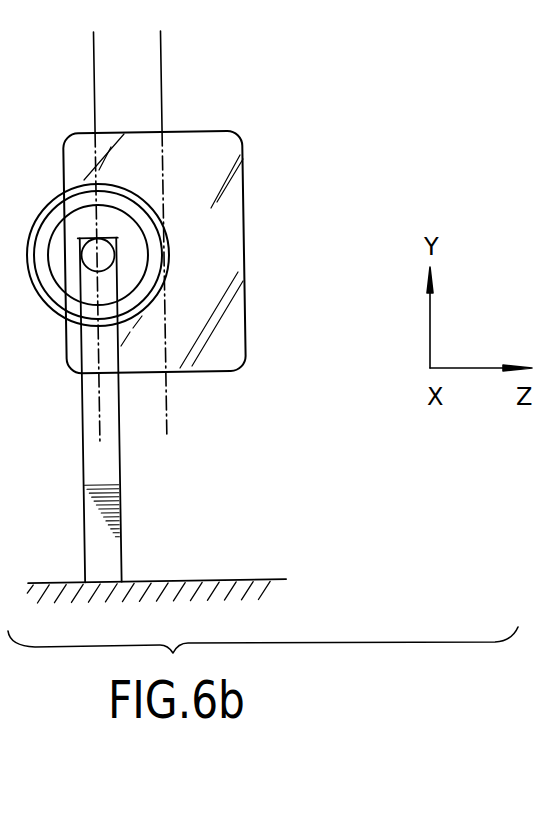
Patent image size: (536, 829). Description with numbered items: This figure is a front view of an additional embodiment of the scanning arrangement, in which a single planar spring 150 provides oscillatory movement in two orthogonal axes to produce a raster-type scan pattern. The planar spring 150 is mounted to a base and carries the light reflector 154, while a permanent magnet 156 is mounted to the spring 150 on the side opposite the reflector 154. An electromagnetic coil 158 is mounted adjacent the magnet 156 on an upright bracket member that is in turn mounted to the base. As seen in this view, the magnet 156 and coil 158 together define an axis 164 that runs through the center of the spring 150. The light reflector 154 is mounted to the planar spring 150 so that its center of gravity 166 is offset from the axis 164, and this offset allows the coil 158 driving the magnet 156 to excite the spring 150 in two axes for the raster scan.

The planar spring 150 is at (121, 505).
The light reflector 154 is at (243, 204).
The magnet 156 is at (112, 255).
The electromagnetic coil 158 is at (63, 300).
The axis 164 is at (94, 62).
The center of gravity 166 is at (160, 62).